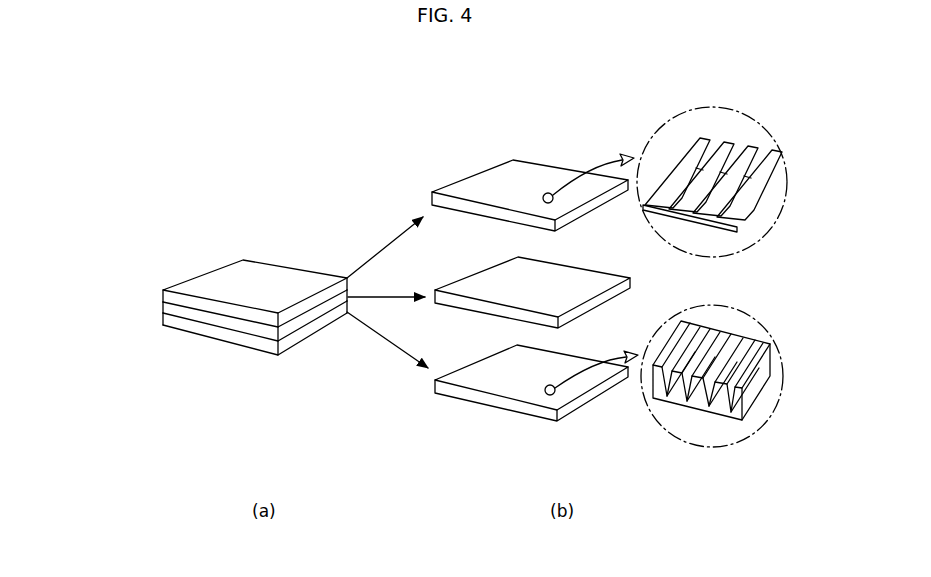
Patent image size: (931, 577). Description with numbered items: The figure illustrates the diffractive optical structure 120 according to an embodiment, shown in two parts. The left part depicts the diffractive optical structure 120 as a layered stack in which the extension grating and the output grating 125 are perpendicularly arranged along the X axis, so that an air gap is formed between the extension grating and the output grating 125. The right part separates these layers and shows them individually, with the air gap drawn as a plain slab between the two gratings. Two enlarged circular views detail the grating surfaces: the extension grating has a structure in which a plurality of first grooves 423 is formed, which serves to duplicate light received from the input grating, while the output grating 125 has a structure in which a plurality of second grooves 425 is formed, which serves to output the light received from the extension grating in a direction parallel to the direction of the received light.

The diffractive optical structure 120 is at (227, 284).
The output grating 125 is at (225, 277).
The second grooves 425 is at (736, 145).
The first grooves 423 is at (722, 342).